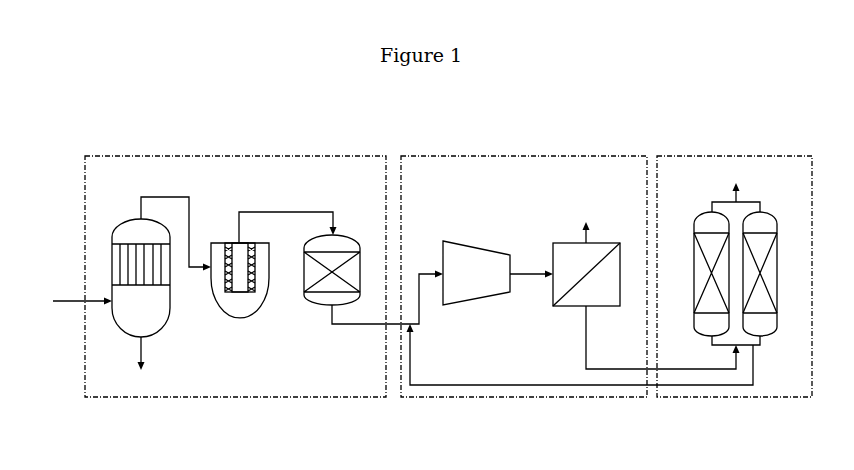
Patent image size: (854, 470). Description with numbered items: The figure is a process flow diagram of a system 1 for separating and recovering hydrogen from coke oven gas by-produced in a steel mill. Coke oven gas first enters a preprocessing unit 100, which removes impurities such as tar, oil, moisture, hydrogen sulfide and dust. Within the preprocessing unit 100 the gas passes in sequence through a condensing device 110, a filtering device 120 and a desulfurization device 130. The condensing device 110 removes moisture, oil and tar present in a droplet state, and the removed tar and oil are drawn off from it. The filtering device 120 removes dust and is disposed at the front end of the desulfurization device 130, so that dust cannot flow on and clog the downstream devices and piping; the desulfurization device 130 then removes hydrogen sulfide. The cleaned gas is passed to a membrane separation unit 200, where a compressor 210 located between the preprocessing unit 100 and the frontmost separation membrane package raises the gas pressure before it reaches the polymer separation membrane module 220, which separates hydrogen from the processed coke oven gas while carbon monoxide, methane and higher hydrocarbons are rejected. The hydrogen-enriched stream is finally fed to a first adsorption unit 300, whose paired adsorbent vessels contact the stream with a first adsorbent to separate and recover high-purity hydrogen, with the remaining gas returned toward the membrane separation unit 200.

The system 1 is at (100, 136).
The preprocessing unit 100 is at (333, 400).
The condensing device 110 is at (130, 317).
The filtering device 120 is at (236, 308).
The desulfurization device 130 is at (323, 302).
The membrane separation unit 200 is at (530, 400).
The compressor 210 is at (472, 299).
The polymer separation membrane module 220 is at (565, 303).
The first adsorption unit 300 is at (735, 400).